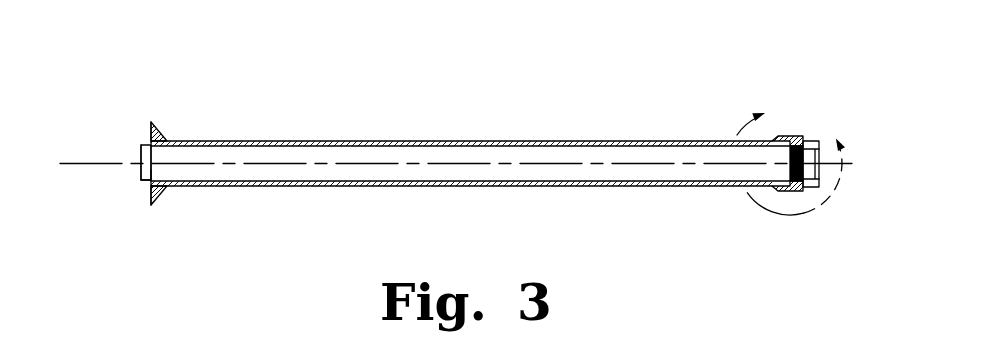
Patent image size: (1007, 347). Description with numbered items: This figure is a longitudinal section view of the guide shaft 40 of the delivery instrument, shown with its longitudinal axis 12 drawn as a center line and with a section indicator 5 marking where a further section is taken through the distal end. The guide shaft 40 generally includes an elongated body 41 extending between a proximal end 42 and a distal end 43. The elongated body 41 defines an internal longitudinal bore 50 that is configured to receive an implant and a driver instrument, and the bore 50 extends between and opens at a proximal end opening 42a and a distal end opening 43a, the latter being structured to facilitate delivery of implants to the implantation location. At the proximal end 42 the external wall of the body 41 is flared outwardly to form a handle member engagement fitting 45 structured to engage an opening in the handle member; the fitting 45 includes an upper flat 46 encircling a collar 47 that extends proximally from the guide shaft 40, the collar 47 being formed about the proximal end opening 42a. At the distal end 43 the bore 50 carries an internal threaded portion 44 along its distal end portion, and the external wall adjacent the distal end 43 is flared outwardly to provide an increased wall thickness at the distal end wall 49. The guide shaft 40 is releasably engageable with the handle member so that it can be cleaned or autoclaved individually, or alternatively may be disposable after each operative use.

The section line 5- 5 is at (791, 163).
The longitudinal axis 12 is at (101, 160).
The guide shaft 40 is at (597, 110).
The elongated body 41 is at (607, 188).
The proximal end 42 is at (161, 132).
The proximal end opening 42a is at (139, 166).
The distal end 43 is at (787, 194).
The distal end opening 43a is at (815, 177).
The internal threaded portion 44 is at (786, 146).
The handle member engagement fitting 45 is at (162, 192).
The upper flat 46 is at (151, 121).
The collar 47 is at (147, 182).
The distal end wall 49 is at (804, 138).
The internal longitudinal bore 50 is at (244, 153).